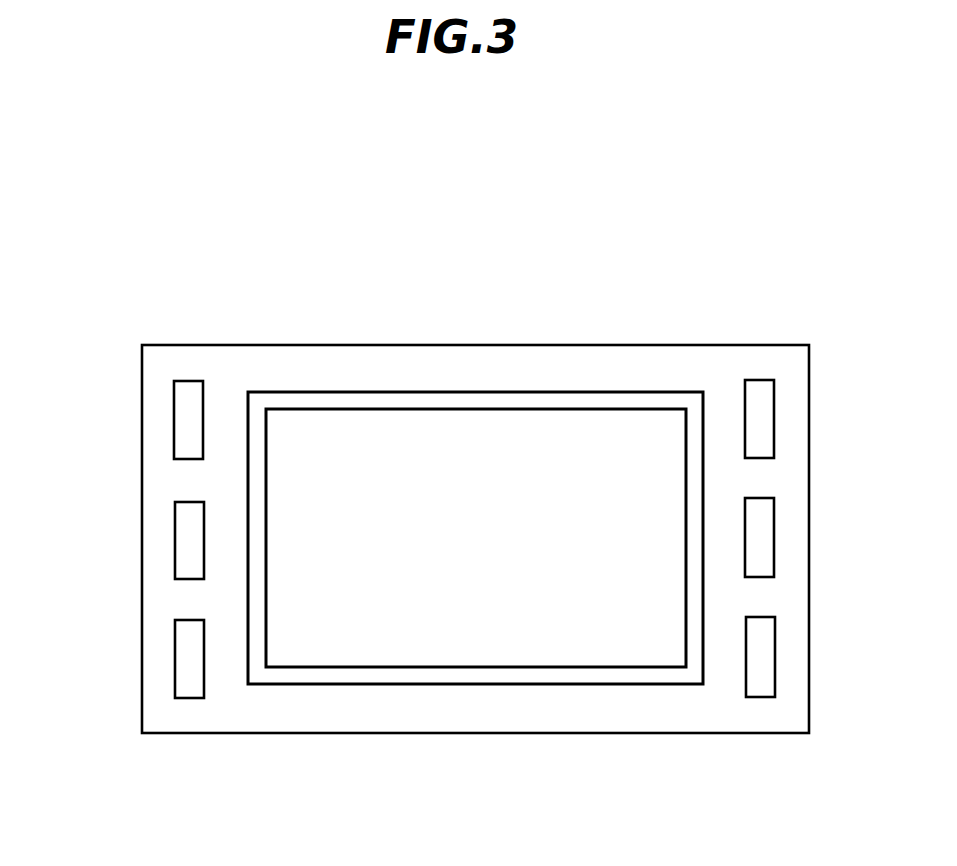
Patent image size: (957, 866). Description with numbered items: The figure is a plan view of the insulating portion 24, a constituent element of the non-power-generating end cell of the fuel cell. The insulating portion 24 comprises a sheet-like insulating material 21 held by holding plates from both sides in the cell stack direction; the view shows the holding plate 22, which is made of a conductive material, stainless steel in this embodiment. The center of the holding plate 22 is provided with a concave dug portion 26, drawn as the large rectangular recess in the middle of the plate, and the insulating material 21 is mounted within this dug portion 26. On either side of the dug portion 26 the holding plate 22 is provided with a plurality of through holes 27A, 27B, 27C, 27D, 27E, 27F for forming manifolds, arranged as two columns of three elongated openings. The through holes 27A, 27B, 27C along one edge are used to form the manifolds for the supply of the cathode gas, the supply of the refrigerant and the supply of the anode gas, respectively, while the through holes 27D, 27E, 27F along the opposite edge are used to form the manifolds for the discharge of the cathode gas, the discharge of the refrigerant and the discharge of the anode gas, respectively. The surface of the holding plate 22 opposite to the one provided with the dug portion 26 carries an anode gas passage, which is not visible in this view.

The insulating portion 24 is at (647, 219).
The holding plate 22 is at (647, 355).
The insulating material 21 is at (548, 647).
The dug portion 26 is at (286, 650).
The through hole 27A is at (185, 433).
The through hole 27B is at (185, 552).
The through hole 27C is at (185, 670).
The through hole 27D is at (765, 663).
The through hole 27E is at (763, 542).
The through hole 27F is at (763, 420).